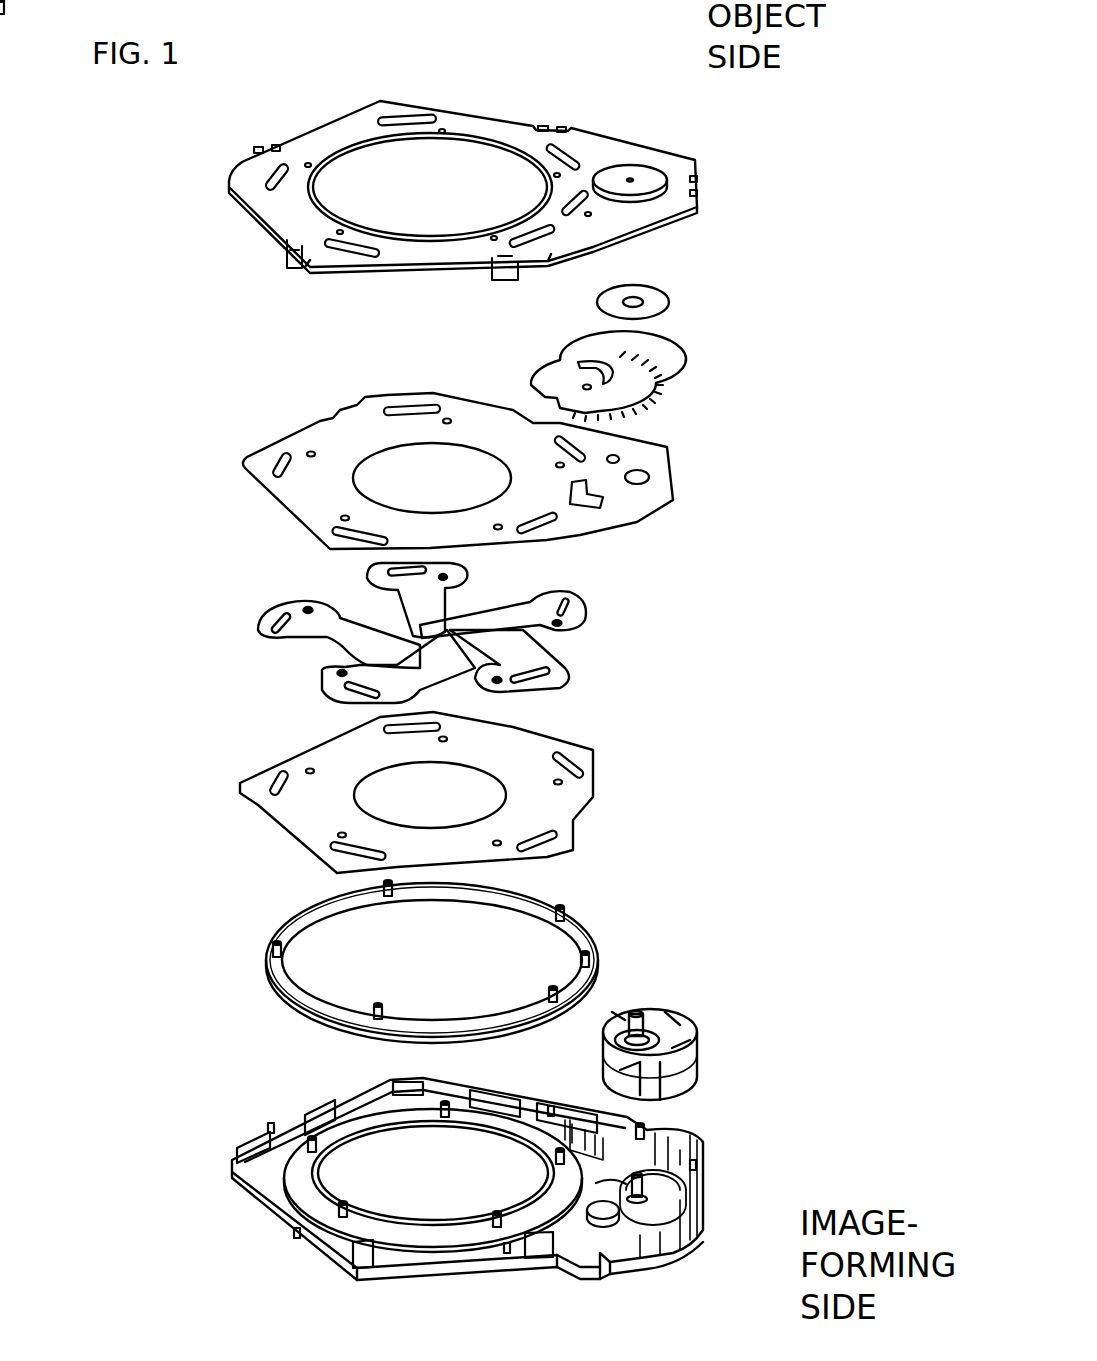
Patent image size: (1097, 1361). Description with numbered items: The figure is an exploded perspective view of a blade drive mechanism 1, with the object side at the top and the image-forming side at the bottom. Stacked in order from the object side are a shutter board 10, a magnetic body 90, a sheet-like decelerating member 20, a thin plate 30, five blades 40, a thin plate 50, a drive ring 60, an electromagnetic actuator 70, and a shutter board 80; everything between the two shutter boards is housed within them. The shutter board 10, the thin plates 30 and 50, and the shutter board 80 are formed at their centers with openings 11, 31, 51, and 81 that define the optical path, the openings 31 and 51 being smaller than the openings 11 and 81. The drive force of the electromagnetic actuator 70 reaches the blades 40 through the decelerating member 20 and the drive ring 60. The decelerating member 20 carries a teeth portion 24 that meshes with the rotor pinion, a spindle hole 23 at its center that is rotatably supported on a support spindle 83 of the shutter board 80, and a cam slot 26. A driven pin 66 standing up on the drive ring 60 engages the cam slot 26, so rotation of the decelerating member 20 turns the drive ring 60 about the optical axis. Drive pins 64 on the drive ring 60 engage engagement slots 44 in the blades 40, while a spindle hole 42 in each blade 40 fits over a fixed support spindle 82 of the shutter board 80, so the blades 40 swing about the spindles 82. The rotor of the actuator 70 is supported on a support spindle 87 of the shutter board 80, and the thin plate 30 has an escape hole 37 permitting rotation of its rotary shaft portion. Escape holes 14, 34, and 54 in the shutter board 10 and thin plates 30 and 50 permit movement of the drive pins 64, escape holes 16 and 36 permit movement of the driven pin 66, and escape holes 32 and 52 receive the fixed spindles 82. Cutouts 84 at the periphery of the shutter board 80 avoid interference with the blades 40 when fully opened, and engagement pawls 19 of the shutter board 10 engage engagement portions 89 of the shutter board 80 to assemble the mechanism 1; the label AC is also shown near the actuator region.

The blade drive mechanism 1 is at (150, 126).
The shutter board 10 is at (653, 145).
The opening 11 is at (373, 177).
The escape holes 14 is at (250, 160).
The escape hole 16 is at (587, 207).
The engagement pawls 19 is at (277, 148).
The decelerating member 20 is at (654, 392).
The spindle hole 23 is at (593, 388).
The teeth portion 24 is at (656, 383).
The cam slot 26 is at (607, 367).
The thin plate 30 is at (677, 495).
The opening 31 is at (420, 482).
The escape holes 32 is at (560, 463).
The escape holes 34 is at (287, 453).
The escape hole 36 is at (640, 487).
The escape hole 37 is at (660, 487).
The blades 40 is at (432, 640).
The spindle hole 42 is at (560, 625).
The engagement slots 44 is at (565, 610).
The thin plate 50 is at (597, 782).
The opening 51 is at (410, 800).
The escape holes 52 is at (447, 738).
The escape holes 54 is at (387, 737).
The drive ring 60 is at (490, 963).
The drive pins 64 is at (388, 892).
The driven pin 66 is at (587, 957).
The electromagnetic actuator 70 is at (700, 1027).
The shutter board 80 is at (707, 1213).
The opening 81 is at (408, 1177).
The support spindles 82 is at (453, 1093).
The support spindle 83 is at (603, 1220).
The cutouts 84 is at (407, 1087).
The support spindle 87 is at (637, 1201).
The engagement portions 89 is at (270, 1123).
The magnetic body 90 is at (677, 298).
The actuator AC is at (680, 1150).